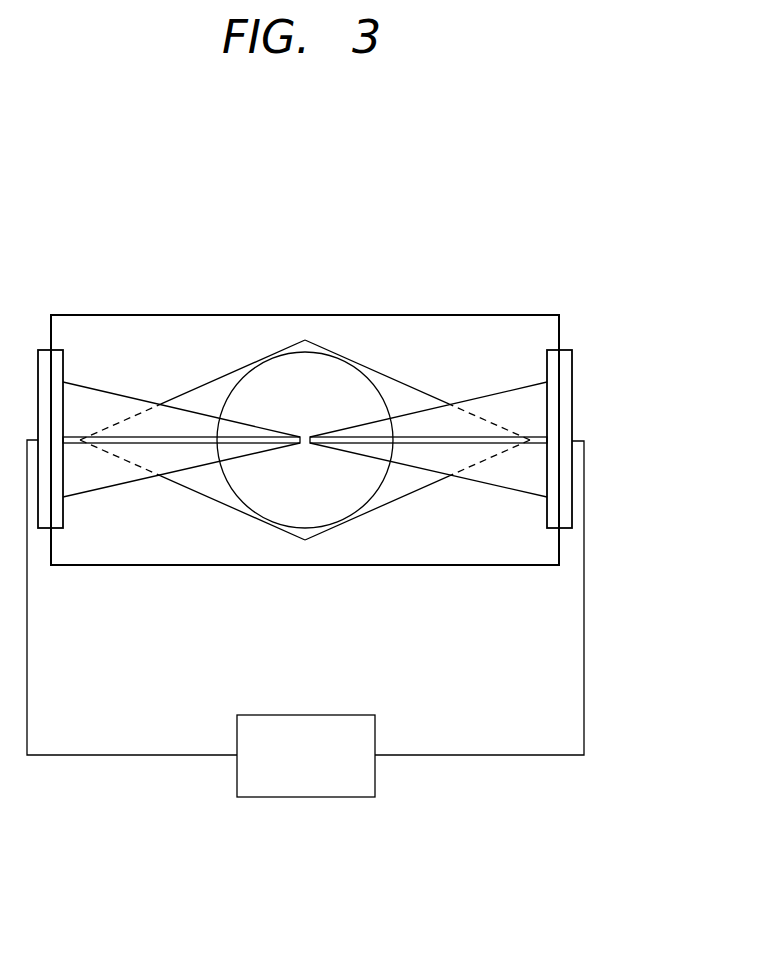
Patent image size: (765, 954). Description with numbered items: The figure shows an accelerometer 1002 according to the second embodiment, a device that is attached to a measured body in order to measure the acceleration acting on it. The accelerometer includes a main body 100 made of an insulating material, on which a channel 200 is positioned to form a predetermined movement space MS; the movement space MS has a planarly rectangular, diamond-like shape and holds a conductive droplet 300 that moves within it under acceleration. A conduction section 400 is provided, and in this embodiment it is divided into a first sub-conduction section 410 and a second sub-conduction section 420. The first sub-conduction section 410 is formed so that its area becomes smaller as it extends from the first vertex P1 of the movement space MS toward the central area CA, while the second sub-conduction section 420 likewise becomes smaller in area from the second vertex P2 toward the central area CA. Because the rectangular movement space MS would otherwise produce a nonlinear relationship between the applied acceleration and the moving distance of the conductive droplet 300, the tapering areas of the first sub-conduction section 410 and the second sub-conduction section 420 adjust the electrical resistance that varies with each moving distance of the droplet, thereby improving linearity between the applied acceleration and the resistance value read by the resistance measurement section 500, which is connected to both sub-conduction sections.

The accelerometer 1002 is at (325, 240).
The main body 100 is at (360, 323).
The channel 200 is at (388, 385).
The conductive droplet 300 is at (277, 370).
The conduction section 400 is at (492, 402).
The first sub-conduction section 410 is at (480, 453).
The second sub-conduction section 420 is at (140, 452).
The central area CA is at (302, 405).
The movement space MS is at (402, 480).
The first vertex P1 is at (530, 443).
The second vertex P2 is at (73, 442).
The resistance measurement section 500 is at (347, 714).